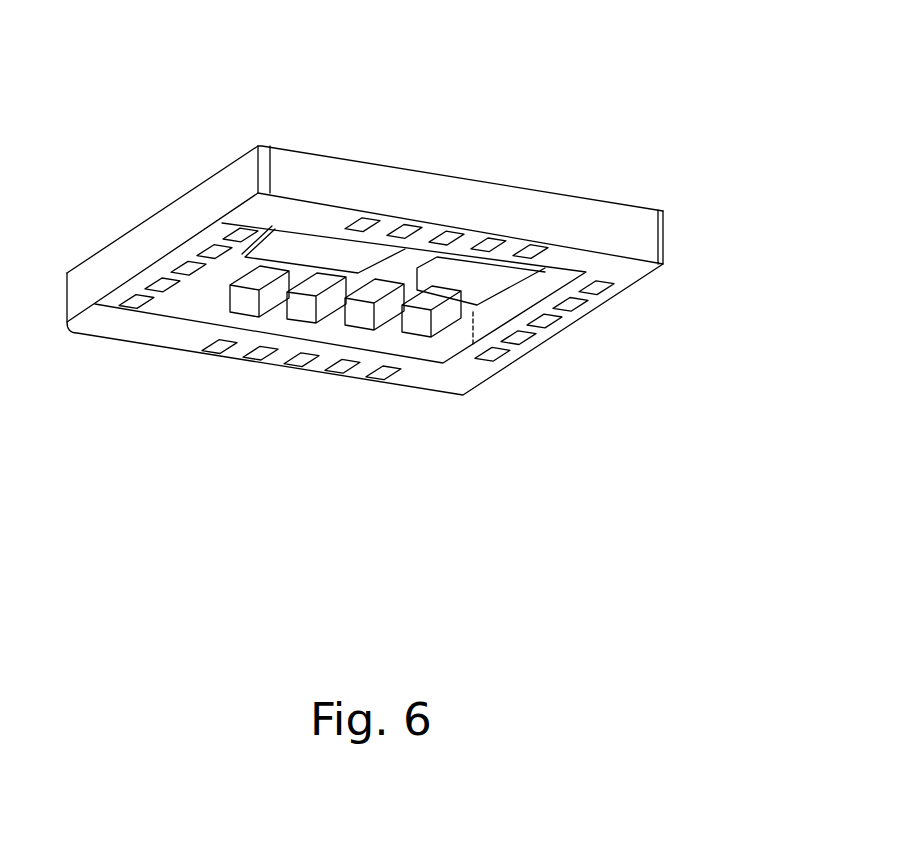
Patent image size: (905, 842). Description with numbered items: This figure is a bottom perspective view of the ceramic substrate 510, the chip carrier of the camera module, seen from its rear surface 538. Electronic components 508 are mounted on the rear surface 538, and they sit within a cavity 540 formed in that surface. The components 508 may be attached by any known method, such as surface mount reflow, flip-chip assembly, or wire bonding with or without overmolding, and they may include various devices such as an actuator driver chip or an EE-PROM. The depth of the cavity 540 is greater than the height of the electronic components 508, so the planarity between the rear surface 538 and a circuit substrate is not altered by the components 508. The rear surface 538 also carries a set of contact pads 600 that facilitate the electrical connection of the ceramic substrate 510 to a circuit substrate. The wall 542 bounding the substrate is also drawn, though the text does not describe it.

The ceramic substrate 510 is at (422, 254).
The rear surface 538 is at (230, 312).
The rear wall 542 is at (498, 183).
The contact pads 600 is at (222, 228).
The electronic components 508 is at (433, 330).
The cavity 540 is at (480, 317).